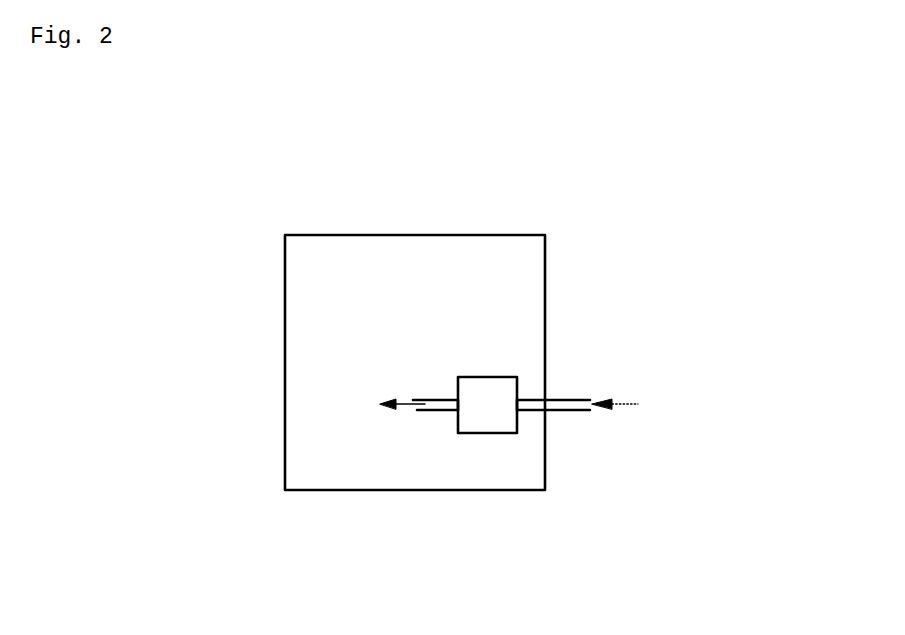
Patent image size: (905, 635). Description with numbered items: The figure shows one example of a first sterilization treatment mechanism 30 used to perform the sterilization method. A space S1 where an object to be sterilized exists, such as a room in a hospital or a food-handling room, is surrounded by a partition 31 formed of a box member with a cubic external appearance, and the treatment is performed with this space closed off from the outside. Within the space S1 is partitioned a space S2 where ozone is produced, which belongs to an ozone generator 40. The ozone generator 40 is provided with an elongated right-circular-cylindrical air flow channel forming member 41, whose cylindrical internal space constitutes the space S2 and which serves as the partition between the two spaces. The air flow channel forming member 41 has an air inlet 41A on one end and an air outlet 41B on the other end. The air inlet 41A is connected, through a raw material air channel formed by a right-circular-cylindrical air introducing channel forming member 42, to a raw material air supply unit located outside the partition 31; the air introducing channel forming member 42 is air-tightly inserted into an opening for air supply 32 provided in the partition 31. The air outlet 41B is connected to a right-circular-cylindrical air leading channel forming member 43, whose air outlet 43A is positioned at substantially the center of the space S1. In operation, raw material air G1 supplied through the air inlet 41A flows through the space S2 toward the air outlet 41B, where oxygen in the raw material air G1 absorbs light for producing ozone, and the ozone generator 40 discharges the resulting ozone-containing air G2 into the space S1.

The first sterilization treatment mechanism 30 is at (165, 167).
The partition 31 is at (355, 234).
The opening for air supply 32 is at (545, 398).
The ozone generator 40 is at (478, 442).
The air flow channel forming member 41 is at (478, 377).
The air inlet 41A is at (522, 412).
The air outlet 41B is at (452, 412).
The air introducing channel forming member 42 is at (570, 412).
The air leading channel forming member 43 is at (433, 400).
The air outlet 43A is at (414, 399).
The space where an object to be sterilized exists S1 is at (320, 323).
The space where ozone is produced S2 is at (485, 403).
The raw material air G1 is at (628, 407).
The ozone-containing air G2 is at (400, 412).